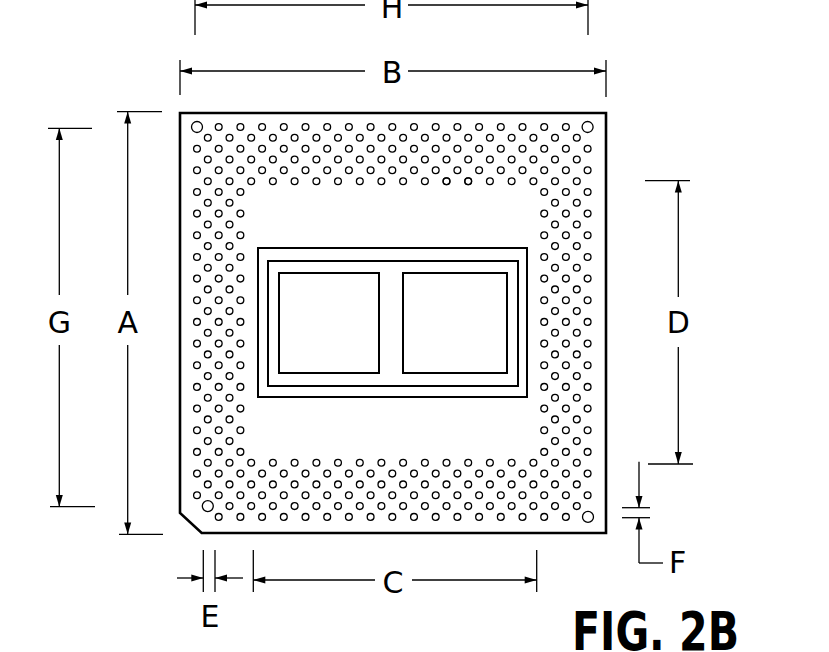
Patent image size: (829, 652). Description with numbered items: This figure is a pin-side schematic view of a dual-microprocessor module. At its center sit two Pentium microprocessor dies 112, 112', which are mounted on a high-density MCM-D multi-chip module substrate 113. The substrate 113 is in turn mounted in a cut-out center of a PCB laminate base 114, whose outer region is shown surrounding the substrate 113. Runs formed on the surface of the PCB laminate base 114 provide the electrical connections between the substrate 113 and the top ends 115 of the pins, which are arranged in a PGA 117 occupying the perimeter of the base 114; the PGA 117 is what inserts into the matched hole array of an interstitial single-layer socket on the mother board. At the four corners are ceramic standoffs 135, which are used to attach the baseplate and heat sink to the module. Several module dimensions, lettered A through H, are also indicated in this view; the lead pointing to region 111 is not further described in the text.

The multichip module substrate 111 is at (386, 377).
The microprocessor die 112 is at (455, 323).
The microprocessor die 112' is at (329, 323).
The MCM-D substrate 113 is at (327, 265).
The PCB laminate base 114 is at (268, 448).
The top ends of pins 115 is at (447, 185).
The PGA 117 is at (262, 186).
The ceramic standoffs 135 is at (192, 125).